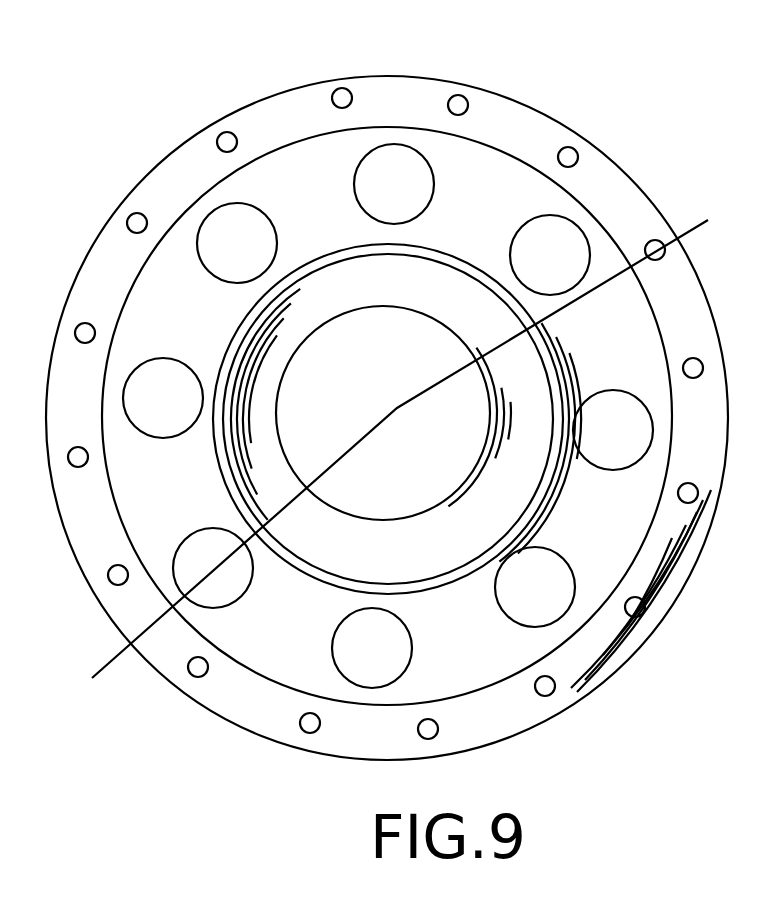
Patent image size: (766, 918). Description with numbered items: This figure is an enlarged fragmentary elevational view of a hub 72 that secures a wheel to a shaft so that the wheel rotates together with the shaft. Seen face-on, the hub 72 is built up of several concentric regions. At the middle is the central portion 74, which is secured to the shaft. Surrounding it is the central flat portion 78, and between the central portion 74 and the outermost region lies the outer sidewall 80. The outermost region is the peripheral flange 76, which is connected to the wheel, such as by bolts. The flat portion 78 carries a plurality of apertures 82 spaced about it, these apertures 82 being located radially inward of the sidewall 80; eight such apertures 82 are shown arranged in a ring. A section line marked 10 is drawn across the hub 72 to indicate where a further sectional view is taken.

The section line 10- 10 is at (708, 220).
The hub 72 is at (195, 716).
The central portion 74 is at (327, 543).
The peripheral flange 76 is at (158, 681).
The central flat portion 78 is at (180, 290).
The outer sidewall 80 is at (310, 140).
The apertures 82 is at (239, 203).